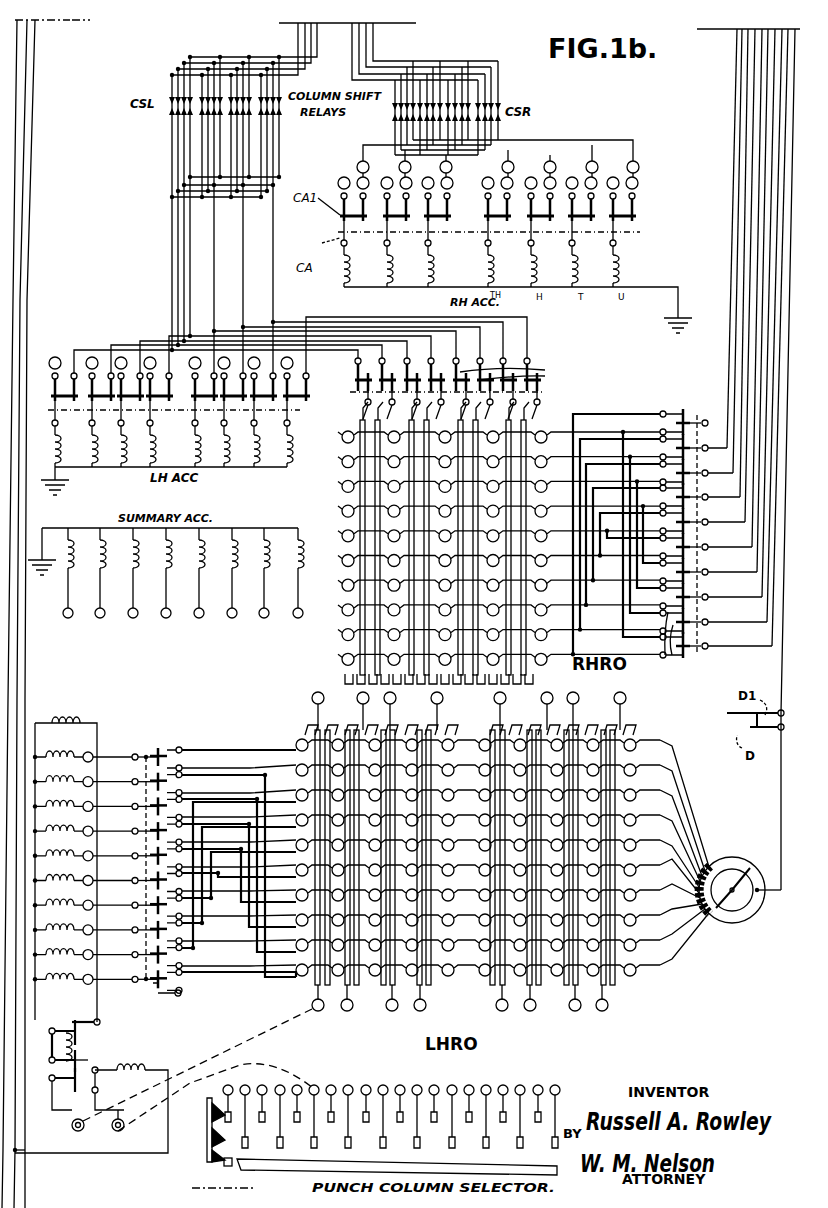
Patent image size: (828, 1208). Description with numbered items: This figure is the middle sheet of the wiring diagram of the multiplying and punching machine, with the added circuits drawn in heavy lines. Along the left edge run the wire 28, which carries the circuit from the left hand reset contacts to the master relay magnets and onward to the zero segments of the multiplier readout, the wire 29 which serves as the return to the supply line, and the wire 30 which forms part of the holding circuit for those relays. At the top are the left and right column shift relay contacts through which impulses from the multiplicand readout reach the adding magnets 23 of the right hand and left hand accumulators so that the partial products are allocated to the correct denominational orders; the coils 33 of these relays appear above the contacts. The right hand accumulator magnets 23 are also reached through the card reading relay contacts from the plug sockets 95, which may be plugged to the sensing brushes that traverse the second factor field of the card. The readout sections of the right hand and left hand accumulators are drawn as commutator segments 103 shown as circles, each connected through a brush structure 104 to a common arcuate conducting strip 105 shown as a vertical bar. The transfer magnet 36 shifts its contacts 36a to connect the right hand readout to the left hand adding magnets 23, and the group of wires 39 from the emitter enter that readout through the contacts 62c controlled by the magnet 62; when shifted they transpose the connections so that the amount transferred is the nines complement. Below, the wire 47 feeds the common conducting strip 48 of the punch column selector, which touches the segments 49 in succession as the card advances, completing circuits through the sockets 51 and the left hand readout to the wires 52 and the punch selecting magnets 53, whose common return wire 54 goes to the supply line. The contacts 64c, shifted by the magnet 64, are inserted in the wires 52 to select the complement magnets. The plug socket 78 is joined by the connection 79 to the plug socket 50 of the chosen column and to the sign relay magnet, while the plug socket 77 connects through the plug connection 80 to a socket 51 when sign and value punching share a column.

The wire 28 is at (27, 70).
The wire 29 is at (35, 93).
The wire 30 is at (17, 114).
The column shift relay coils 33 is at (200, 35).
The wires 39 is at (770, 148).
The plug sockets 95 is at (400, 183).
The adding magnets 23 is at (585, 278).
The RH to LH transfer magnet 36 is at (352, 400).
The contacts 36a is at (545, 376).
The magnet 62 is at (705, 398).
The contacts 62c is at (672, 658).
The commutator segments 103 is at (341, 632).
The brush structure 104 is at (345, 680).
The common arcuate conducting strip 105 is at (322, 727).
The punch selecting magnets 53 is at (66, 762).
The contacts 64c is at (182, 815).
The magnet 64 is at (150, 1002).
The common return wire 54 is at (28, 1022).
The wires 52 is at (310, 1020).
The sockets 51 is at (585, 1012).
The plug connection 80 is at (215, 1060).
The connection 79 is at (196, 1090).
The plug socket 50 is at (443, 1091).
The segments 49 is at (541, 1142).
The wire 47 is at (225, 1173).
The common conducting strip 48 is at (305, 1166).
The plug socket 77 is at (76, 1131).
The plug socket 78 is at (120, 1132).